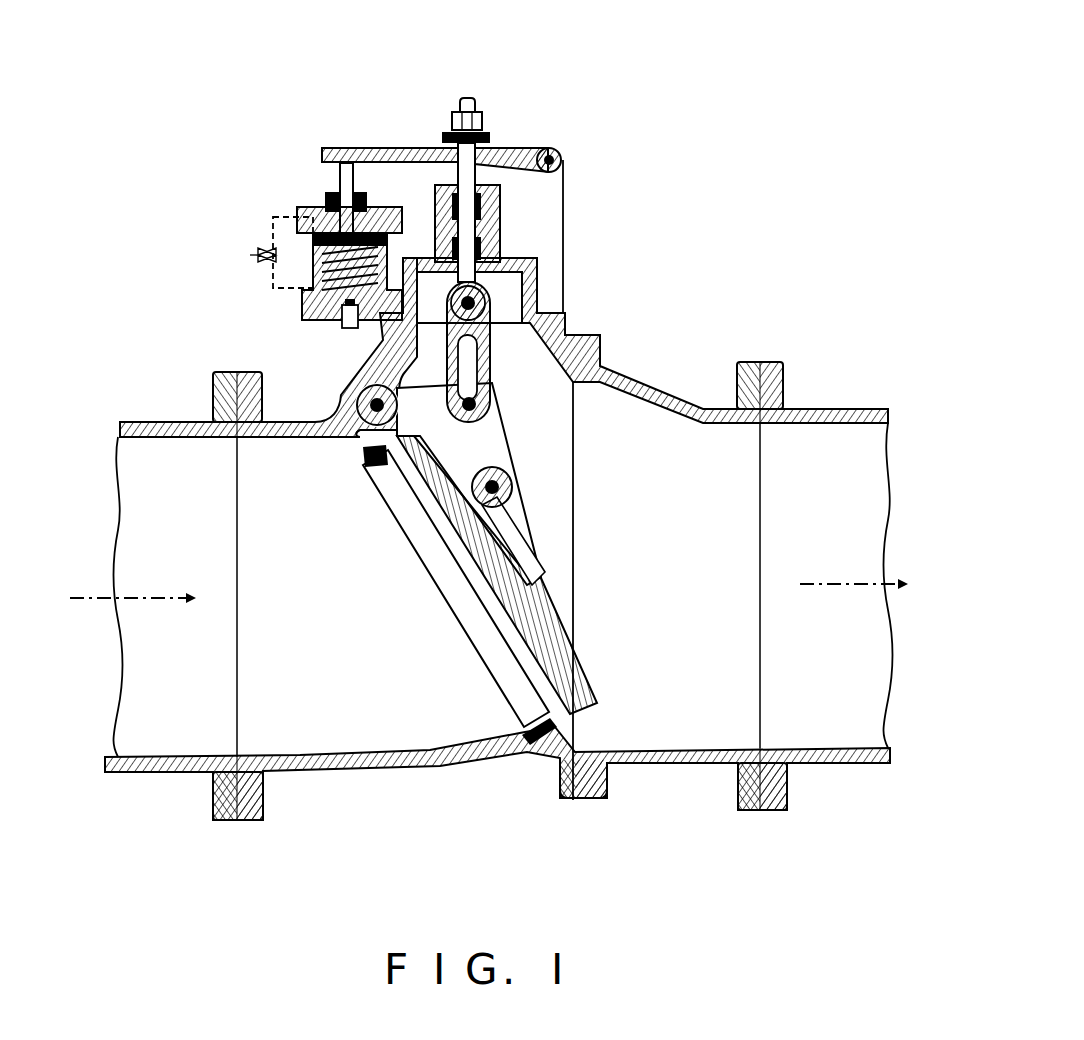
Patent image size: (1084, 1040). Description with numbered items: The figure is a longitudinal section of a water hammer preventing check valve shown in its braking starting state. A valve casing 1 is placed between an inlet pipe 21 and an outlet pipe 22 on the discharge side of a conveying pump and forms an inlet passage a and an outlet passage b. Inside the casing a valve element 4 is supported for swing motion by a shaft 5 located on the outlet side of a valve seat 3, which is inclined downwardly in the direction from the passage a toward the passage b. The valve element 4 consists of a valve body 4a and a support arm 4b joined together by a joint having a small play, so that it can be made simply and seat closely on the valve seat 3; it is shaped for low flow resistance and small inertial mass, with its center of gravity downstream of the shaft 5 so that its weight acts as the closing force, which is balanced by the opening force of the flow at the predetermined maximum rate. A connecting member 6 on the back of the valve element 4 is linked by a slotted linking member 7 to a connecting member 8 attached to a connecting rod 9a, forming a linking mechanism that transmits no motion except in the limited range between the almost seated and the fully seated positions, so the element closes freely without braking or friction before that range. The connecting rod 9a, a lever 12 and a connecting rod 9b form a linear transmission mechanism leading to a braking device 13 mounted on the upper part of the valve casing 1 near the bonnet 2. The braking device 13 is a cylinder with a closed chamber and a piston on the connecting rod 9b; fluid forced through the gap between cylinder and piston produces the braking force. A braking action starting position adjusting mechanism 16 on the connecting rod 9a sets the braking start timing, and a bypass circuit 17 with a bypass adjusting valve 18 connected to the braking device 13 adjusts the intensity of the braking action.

The valve casing 1 is at (347, 373).
The bonnet 2 is at (428, 268).
The valve seat 3 is at (537, 757).
The valve element 4 is at (483, 433).
The valve body 4a is at (477, 537).
The support arm 4b is at (527, 427).
The shaft 5 is at (340, 405).
The connecting member 6 is at (495, 355).
The linking member 7 is at (505, 292).
The connecting member 8 is at (502, 240).
The connecting rod 9a is at (468, 187).
The connecting rod 9b is at (347, 195).
The lever 12 is at (392, 158).
The braking device 13 is at (292, 238).
The braking action starting position adjusting mechanism 16 is at (490, 117).
The bypass circuit 17 is at (275, 278).
The bypass adjusting valve 18 is at (273, 262).
The inlet pipe 21 is at (205, 768).
The outlet pipe 22 is at (797, 753).
The inlet passage a is at (327, 595).
The outlet passage b is at (690, 593).